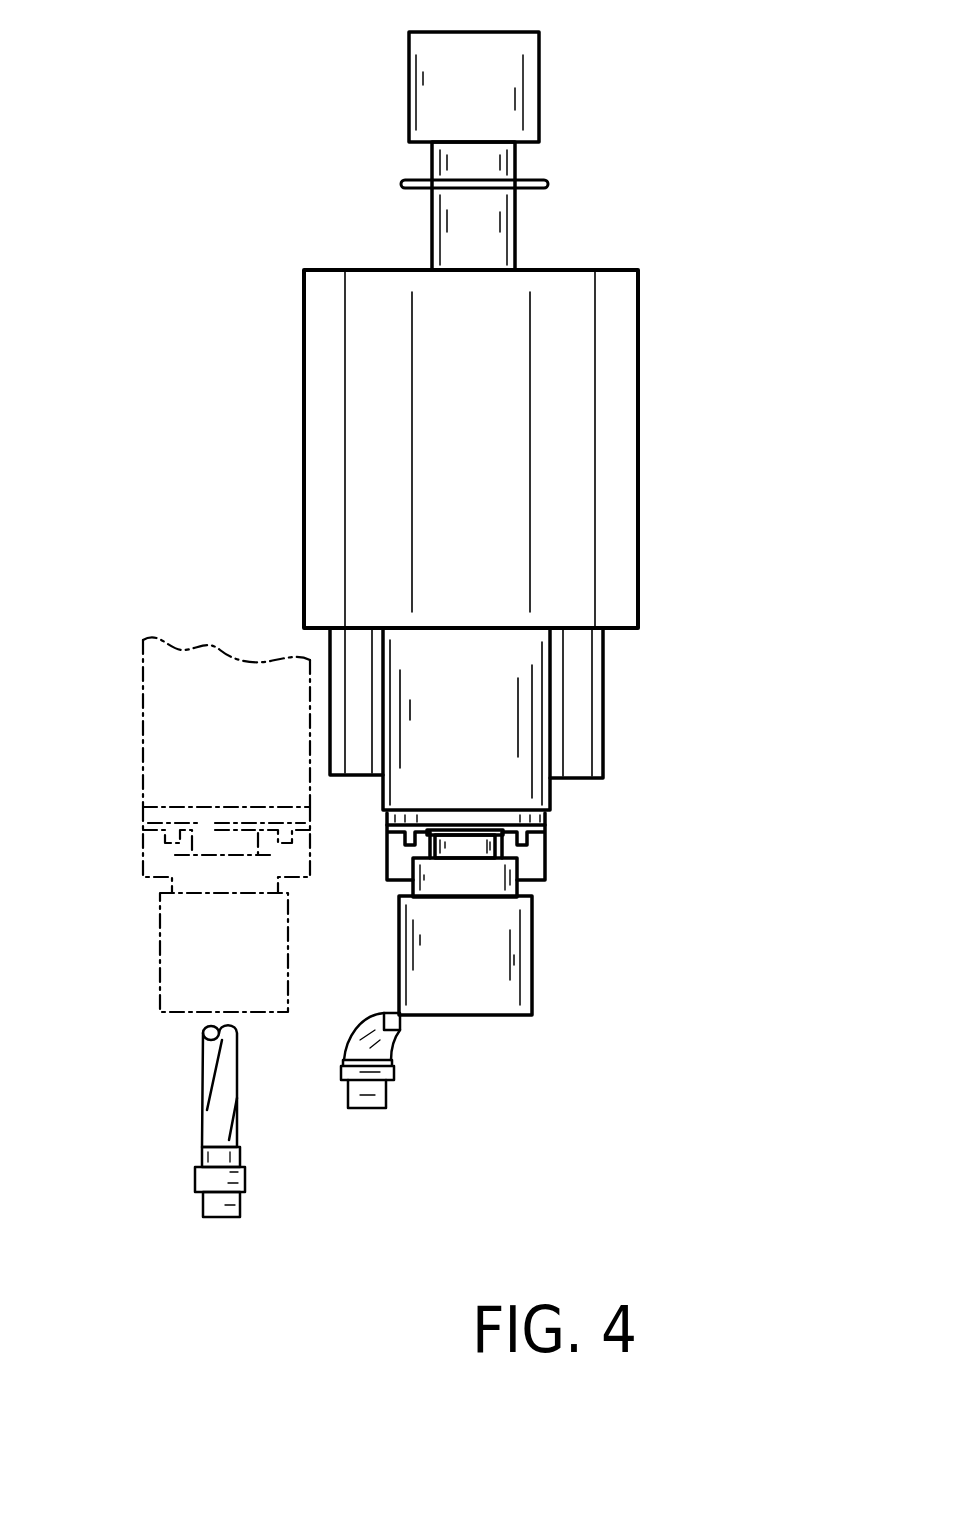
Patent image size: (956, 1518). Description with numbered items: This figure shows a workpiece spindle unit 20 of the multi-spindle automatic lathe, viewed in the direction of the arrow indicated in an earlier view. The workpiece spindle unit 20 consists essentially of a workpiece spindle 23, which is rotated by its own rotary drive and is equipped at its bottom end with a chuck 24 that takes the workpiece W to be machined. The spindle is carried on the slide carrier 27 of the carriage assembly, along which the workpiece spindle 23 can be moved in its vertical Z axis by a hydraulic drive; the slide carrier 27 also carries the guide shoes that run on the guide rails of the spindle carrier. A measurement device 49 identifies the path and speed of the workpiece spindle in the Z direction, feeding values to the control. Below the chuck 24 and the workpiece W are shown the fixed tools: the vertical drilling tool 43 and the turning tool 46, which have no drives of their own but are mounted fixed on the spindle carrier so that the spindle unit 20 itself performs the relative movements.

The workpiece spindle unit 20 is at (666, 256).
The workpiece spindle 23 is at (513, 698).
The chuck 24 is at (545, 820).
The slide carrier 27 is at (578, 732).
The tool 43 is at (215, 1137).
The turning tool 46 is at (394, 1048).
The measurement device 49 is at (402, 188).
The workpiece W is at (502, 977).